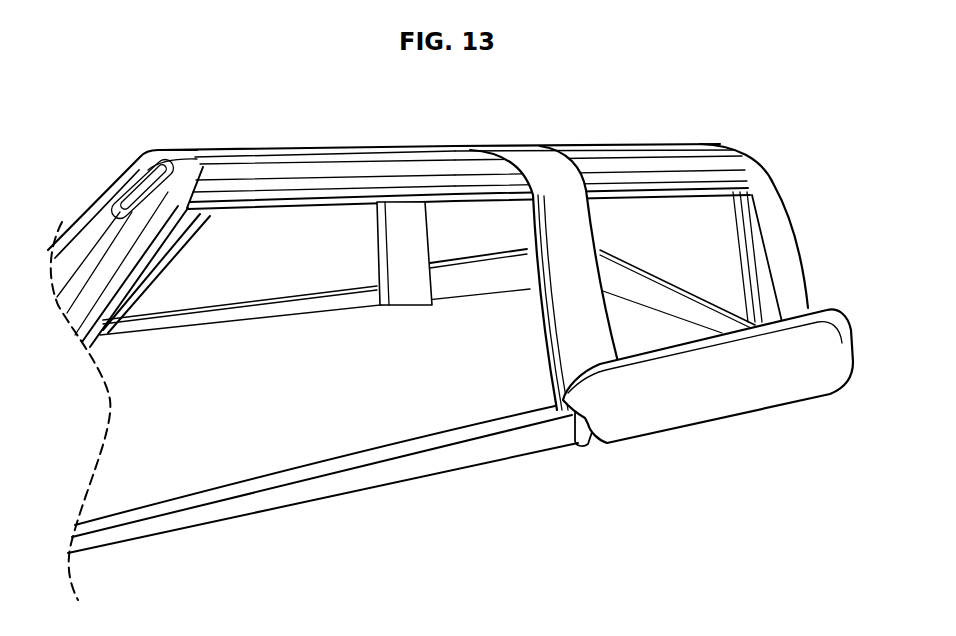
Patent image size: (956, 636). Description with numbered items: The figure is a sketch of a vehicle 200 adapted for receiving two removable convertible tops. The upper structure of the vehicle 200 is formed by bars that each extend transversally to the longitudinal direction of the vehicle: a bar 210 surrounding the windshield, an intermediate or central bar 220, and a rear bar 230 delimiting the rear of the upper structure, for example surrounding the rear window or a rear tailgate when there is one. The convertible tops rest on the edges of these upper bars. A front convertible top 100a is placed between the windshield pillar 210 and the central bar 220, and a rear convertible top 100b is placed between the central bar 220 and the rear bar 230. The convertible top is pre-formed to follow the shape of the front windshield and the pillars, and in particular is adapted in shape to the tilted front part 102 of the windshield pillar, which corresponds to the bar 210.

The vehicle 200 is at (450, 343).
The front convertible top 100a is at (322, 157).
The rear convertible top 100b is at (603, 151).
The tilted front part of the windshield pillar 102 is at (171, 256).
The windshield pillar bar 210 is at (128, 240).
The intermediate bar 220 is at (583, 288).
The rear bar 230 is at (777, 238).